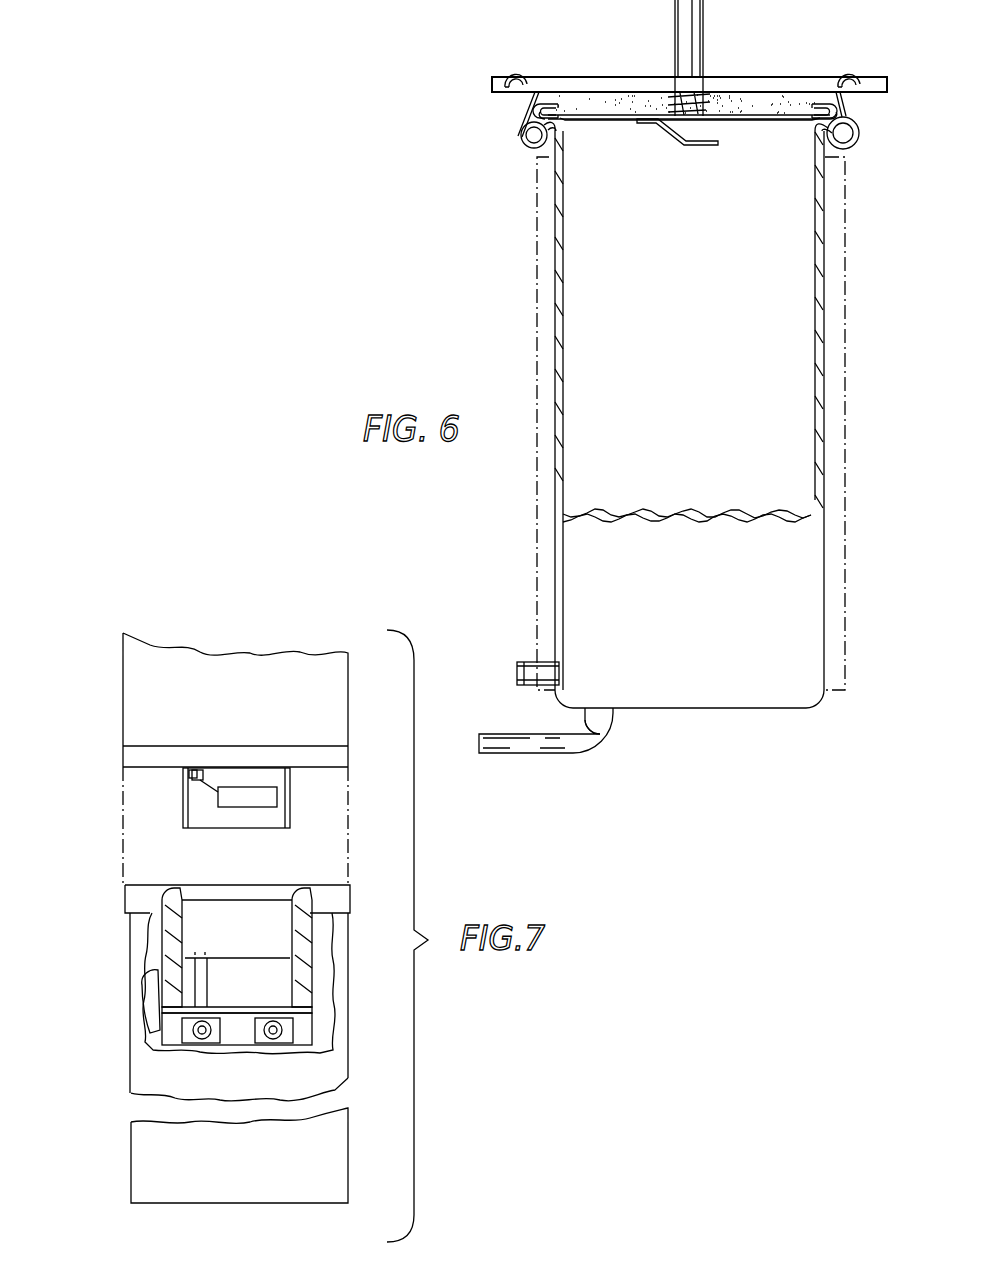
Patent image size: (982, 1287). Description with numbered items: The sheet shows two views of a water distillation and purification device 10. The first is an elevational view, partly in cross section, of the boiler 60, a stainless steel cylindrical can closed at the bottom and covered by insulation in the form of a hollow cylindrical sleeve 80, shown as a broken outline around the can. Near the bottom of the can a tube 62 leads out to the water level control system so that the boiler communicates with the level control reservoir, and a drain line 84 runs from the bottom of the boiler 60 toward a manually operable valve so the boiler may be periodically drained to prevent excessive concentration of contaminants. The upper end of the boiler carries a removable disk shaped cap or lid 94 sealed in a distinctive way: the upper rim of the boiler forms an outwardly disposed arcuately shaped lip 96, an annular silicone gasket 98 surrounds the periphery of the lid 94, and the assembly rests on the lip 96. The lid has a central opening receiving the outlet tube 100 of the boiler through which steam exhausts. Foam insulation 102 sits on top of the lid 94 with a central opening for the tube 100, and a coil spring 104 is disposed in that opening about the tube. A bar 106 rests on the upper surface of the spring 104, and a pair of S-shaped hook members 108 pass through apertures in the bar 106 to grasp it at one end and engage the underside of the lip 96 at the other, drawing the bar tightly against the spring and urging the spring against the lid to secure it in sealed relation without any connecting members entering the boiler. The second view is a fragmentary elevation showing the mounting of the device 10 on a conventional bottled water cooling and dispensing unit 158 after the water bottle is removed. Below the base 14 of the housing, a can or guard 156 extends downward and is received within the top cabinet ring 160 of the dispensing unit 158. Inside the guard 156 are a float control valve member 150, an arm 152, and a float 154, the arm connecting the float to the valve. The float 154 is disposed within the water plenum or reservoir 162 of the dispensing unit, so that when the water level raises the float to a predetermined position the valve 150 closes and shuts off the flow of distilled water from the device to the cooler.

In FIG. 6, the boiler 60 is at (838, 273).
In FIG. 6, the tube 62 is at (527, 665).
In FIG. 6, the hollow cylindrical sleeve 80 is at (846, 365).
In FIG. 6, the drain line 84 is at (560, 746).
In FIG. 6, the cap or lid 94 is at (598, 115).
In FIG. 6, the lip 96 is at (523, 133).
In FIG. 6, the silicone gasket 98 is at (550, 100).
In FIG. 6, the outlet tube 100 is at (703, 30).
In FIG. 6, the foam insulation 102 is at (743, 97).
In FIG. 6, the coil spring 104 is at (688, 100).
In FIG. 6, the bar 106 is at (783, 82).
In FIG. 6, the S-shaped hook members 108 is at (520, 70).
In FIG. 7, the water distillation and purification device 10 is at (112, 697).
In FIG. 7, the base 14 is at (135, 755).
In FIG. 7, the float control valve member 150 is at (188, 772).
In FIG. 7, the arm 152 is at (200, 780).
In FIG. 7, the float 154 is at (268, 800).
In FIG. 7, the can or guard 156 is at (290, 782).
In FIG. 7, the bottled water cooling and dispensing unit 158 is at (122, 985).
In FIG. 7, the top cabinet ring 160 is at (282, 880).
In FIG. 7, the water plenum or reservoir 162 is at (252, 890).